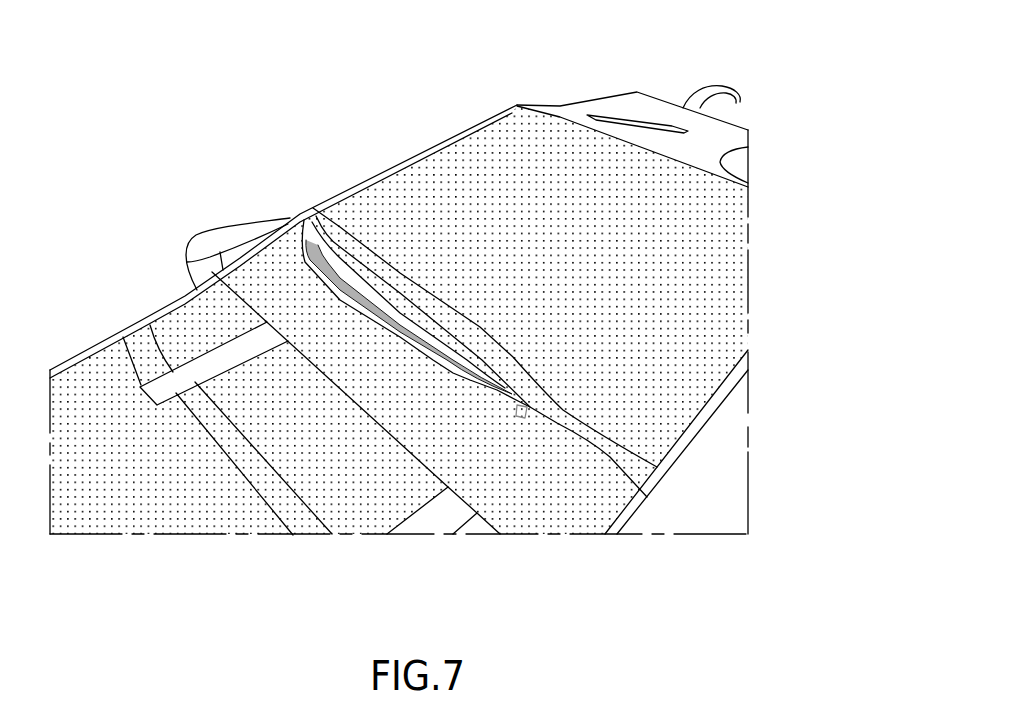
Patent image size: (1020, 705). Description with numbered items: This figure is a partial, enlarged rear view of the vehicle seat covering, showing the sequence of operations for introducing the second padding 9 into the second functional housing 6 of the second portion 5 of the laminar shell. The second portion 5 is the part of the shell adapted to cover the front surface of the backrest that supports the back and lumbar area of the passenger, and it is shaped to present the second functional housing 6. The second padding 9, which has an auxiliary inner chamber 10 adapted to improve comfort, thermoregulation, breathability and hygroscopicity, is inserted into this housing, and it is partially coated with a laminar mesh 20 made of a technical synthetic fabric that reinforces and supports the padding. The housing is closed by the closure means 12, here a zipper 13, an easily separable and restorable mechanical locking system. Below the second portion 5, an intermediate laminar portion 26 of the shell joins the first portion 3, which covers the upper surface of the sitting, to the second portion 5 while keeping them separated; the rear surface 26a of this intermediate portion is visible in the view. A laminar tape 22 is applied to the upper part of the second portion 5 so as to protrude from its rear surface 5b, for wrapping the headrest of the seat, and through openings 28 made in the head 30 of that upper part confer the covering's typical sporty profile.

The first portion 3 is at (146, 496).
The second portion 5 is at (563, 259).
The rear surface 5b is at (690, 301).
The second functional housing 6 is at (290, 240).
The second padding 9 is at (504, 414).
The auxiliary inner chamber 10 is at (471, 393).
The closure means 12 is at (580, 420).
The zipper 13 is at (463, 372).
The laminar mesh 20 is at (337, 263).
The laminar tape 22 is at (687, 103).
The intermediate laminar portion 26 is at (183, 333).
The rear surface 26a is at (200, 292).
The through openings 28 is at (620, 95).
The head 30 is at (717, 138).